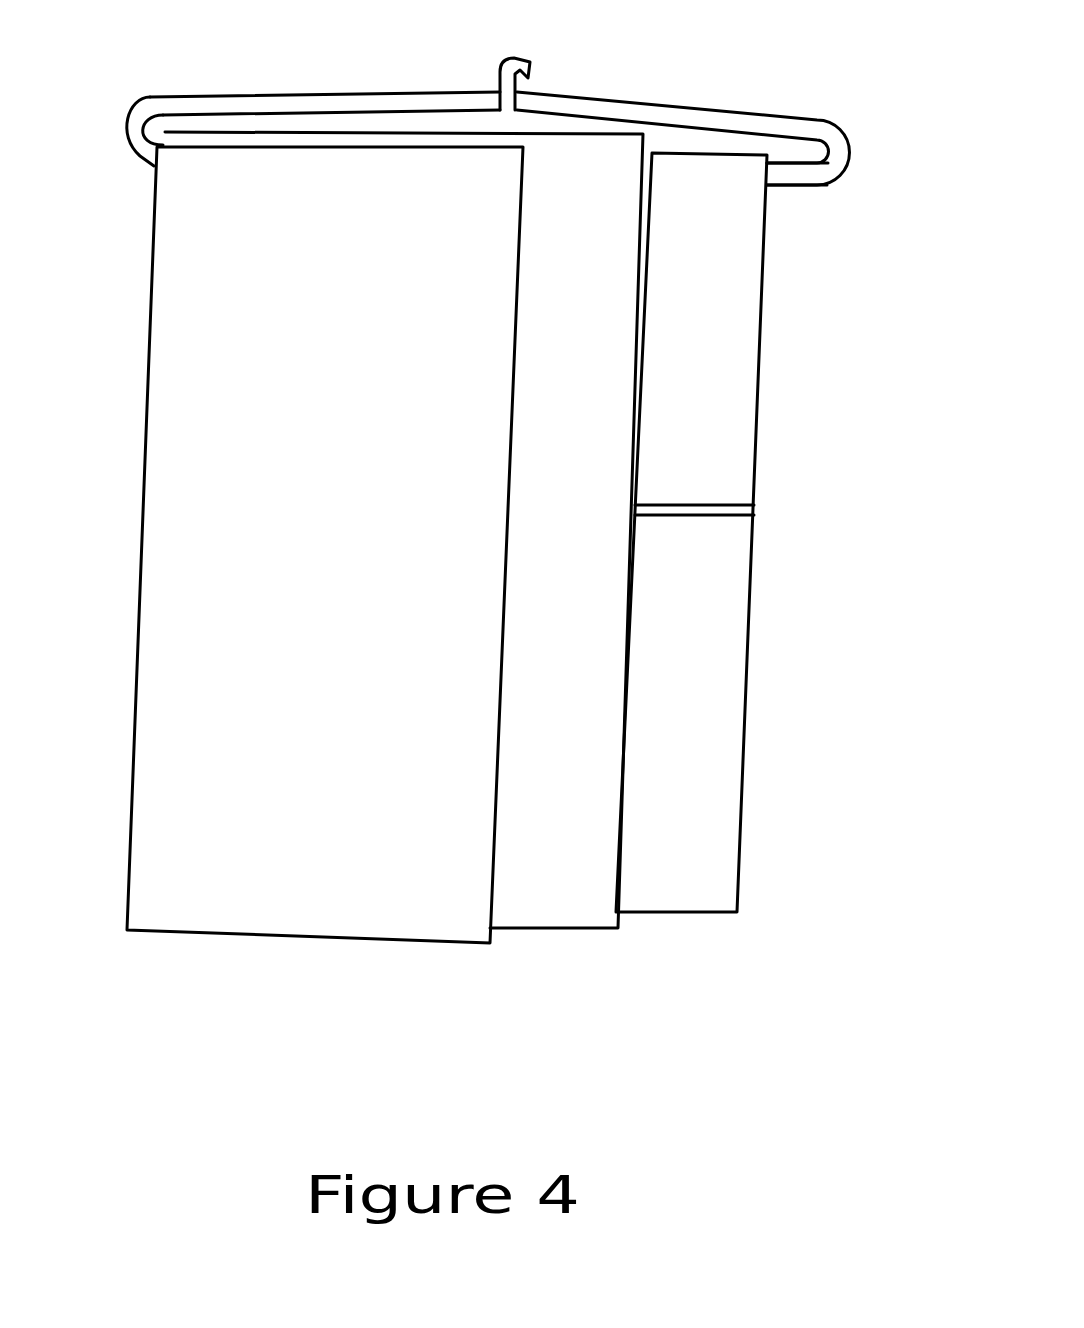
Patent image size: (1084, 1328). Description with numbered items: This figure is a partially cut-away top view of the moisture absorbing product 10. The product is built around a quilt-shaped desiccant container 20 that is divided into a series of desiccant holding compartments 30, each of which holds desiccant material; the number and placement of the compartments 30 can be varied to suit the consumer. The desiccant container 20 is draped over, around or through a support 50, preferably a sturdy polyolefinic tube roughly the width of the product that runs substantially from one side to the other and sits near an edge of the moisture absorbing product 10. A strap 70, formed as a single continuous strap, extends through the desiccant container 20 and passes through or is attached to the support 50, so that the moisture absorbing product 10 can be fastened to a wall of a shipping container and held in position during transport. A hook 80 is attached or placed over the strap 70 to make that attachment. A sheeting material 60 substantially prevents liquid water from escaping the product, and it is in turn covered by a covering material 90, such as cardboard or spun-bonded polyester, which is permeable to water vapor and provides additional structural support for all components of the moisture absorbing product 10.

The moisture absorbing product 10 is at (203, 1025).
The desiccant container 20 is at (750, 595).
The desiccant holding compartments 30 is at (717, 400).
The support 50 is at (808, 181).
The sheeting material 60 is at (558, 893).
The strap 70 is at (775, 125).
The hook 80 is at (531, 62).
The covering material 90 is at (337, 883).